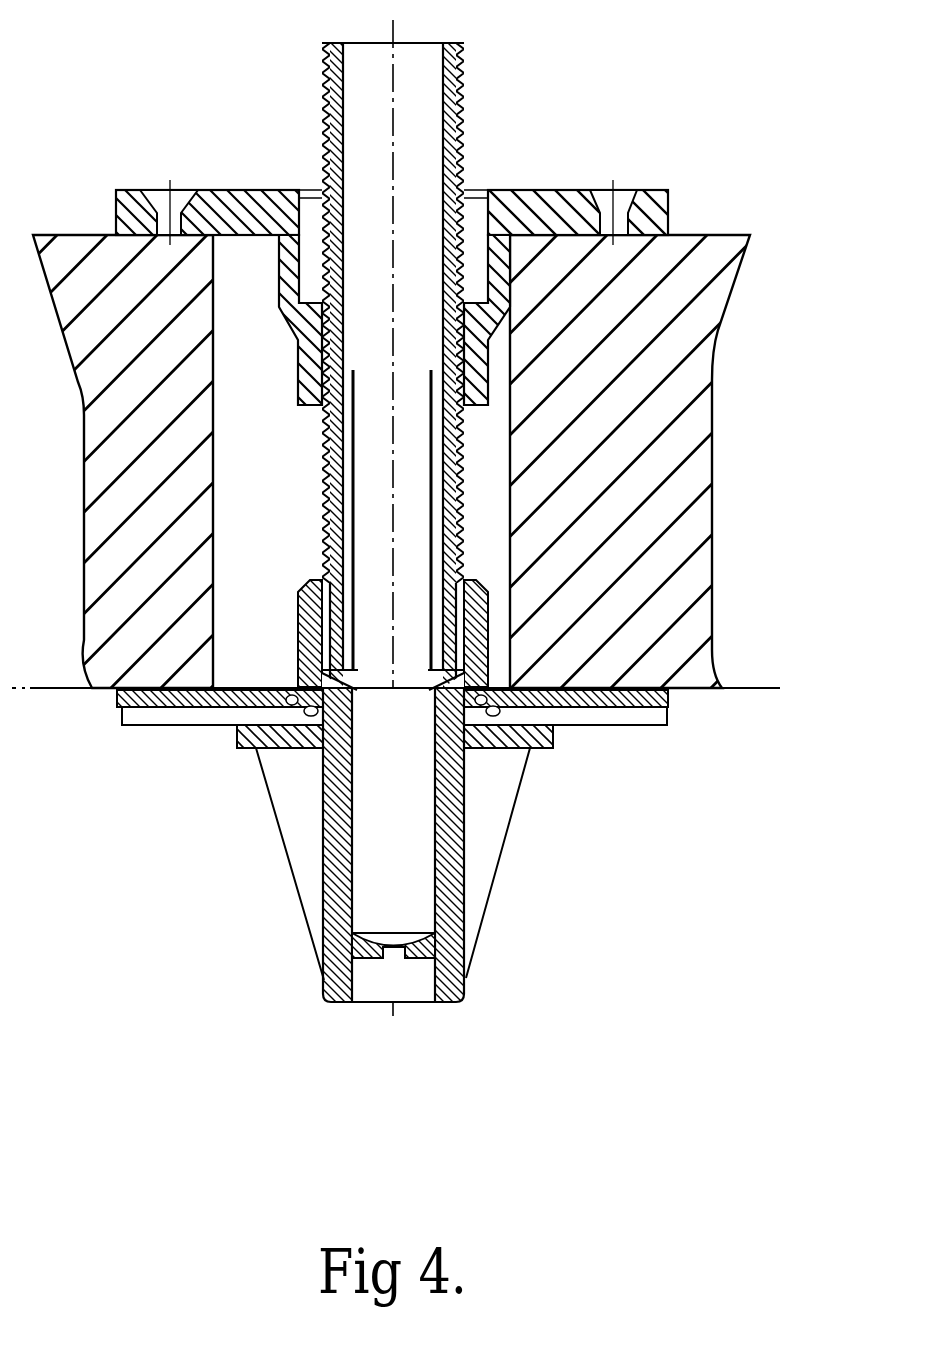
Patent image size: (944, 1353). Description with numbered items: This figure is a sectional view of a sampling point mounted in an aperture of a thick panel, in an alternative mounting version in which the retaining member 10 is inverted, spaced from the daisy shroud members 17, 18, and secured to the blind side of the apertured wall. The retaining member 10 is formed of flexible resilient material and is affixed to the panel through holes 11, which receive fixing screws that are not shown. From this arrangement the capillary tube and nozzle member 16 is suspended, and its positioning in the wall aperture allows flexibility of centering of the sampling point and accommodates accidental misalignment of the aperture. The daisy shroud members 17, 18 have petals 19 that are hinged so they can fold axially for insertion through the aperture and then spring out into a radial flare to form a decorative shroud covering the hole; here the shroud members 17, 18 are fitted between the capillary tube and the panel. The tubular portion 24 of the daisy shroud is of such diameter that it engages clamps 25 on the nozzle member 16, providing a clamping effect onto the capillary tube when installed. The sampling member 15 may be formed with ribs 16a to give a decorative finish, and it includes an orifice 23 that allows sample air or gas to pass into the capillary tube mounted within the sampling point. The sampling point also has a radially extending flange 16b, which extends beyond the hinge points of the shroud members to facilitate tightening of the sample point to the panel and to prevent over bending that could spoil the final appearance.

The retaining member 10 is at (547, 193).
The holes 11 is at (620, 200).
The sampling member 15 is at (485, 898).
The capillary tube and nozzle member 16 is at (463, 110).
The ribs 16a is at (300, 843).
The radially extending flange 16b is at (532, 748).
The daisy shroud member 17 is at (612, 730).
The daisy shroud member 18 is at (218, 680).
The petals 19 is at (142, 725).
The orifice 23 is at (393, 957).
The tubular portion 24 is at (300, 622).
The clamps 25 is at (457, 587).